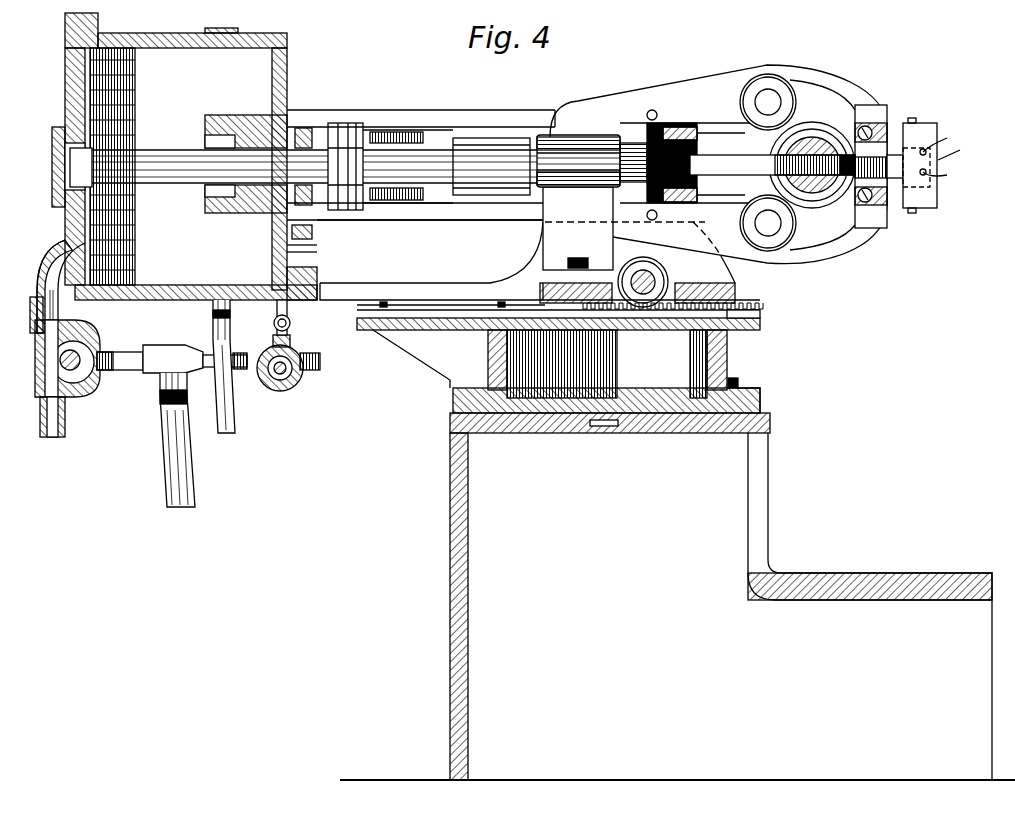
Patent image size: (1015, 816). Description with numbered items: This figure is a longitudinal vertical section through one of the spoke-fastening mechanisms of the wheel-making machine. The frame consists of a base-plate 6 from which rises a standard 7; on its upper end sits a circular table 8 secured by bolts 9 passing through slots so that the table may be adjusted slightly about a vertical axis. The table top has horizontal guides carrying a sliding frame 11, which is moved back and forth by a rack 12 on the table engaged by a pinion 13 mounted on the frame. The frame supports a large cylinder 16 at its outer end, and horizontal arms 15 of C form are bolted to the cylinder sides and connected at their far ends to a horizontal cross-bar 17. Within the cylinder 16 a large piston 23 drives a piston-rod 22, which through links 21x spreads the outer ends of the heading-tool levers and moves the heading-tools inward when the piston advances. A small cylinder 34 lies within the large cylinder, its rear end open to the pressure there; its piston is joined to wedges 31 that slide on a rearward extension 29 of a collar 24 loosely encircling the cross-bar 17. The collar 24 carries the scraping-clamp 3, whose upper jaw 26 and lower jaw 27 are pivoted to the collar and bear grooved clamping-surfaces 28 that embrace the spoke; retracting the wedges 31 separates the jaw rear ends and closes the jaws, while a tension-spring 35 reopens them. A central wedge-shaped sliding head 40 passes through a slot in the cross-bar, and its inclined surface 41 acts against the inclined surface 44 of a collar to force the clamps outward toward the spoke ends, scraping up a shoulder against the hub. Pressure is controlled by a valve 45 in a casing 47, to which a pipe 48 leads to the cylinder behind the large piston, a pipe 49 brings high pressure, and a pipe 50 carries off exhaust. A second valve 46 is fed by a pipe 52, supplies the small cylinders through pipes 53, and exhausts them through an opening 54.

The cylinder 16 is at (287, 76).
The large piston 23 is at (125, 166).
The small cylinder 34 is at (244, 213).
The piston-rod 22 is at (303, 166).
The links 21x is at (393, 130).
The rearward extension 29 is at (512, 195).
The horizontal arms 15 is at (472, 108).
The sliding frame 11 is at (540, 248).
The pinion 13 is at (670, 284).
The rack 12 is at (713, 314).
The standard 7 is at (677, 555).
The base-plate 6 is at (925, 670).
The bolts 9 is at (738, 377).
The circular table 8 is at (757, 392).
The wedges 31 is at (607, 133).
The tension-spring 35 is at (660, 126).
The cross-bar 17 is at (810, 140).
The collar 24 is at (815, 203).
The wedge-shaped sliding head 40 is at (772, 165).
The inclined surface 44 is at (815, 165).
The inclined surface 41 is at (871, 167).
The scraping-clamp 3 is at (912, 156).
The upper jaw 26 is at (944, 140).
The grooved clamping-surfaces 28 is at (958, 158).
The lower jaw 27 is at (943, 180).
The pipe 48 is at (50, 299).
The valve 45 is at (95, 386).
The exhaust pipe 50 is at (42, 431).
The valve casing 47 is at (106, 353).
The pipe 49 is at (127, 357).
The pipe 52 is at (240, 356).
The valve 46 is at (285, 391).
The pipes 53 is at (290, 319).
The exhaust opening 54 is at (320, 359).